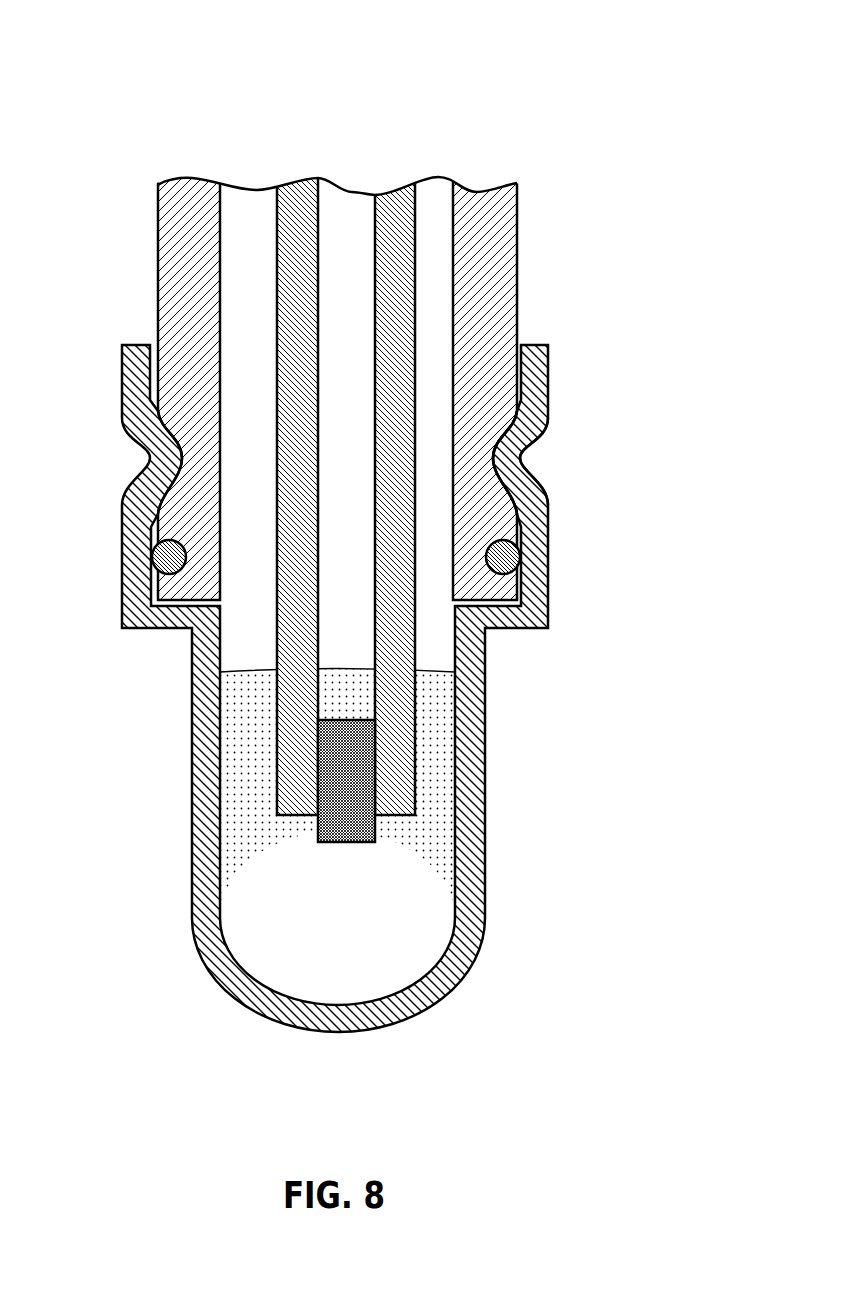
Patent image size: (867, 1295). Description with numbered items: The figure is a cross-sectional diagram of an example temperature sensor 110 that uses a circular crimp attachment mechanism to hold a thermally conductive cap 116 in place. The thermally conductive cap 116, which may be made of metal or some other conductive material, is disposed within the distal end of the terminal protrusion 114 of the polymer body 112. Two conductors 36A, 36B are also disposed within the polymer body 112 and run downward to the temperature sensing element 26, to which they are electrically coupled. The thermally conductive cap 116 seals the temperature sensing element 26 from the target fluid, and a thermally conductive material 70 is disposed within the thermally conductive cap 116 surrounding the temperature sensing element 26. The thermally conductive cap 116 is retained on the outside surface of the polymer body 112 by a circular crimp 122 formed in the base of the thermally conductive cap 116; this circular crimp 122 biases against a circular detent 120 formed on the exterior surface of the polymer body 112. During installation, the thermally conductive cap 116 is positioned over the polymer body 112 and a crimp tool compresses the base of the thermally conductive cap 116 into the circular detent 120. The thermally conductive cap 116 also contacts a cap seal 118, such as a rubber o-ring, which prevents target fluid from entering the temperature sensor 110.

The temperature sensor 110 is at (674, 97).
The polymer body 112 is at (517, 257).
The terminal protrusion 114 is at (143, 283).
The thermally conductive cap 116 is at (277, 1018).
The cap seal 118 is at (519, 562).
The circular detent 120 is at (495, 446).
The circular crimp 122 is at (525, 469).
The conductor 36A is at (293, 193).
The conductor 36B is at (393, 195).
The temperature sensing element 26 is at (325, 835).
The thermally conductive material 70 is at (421, 928).